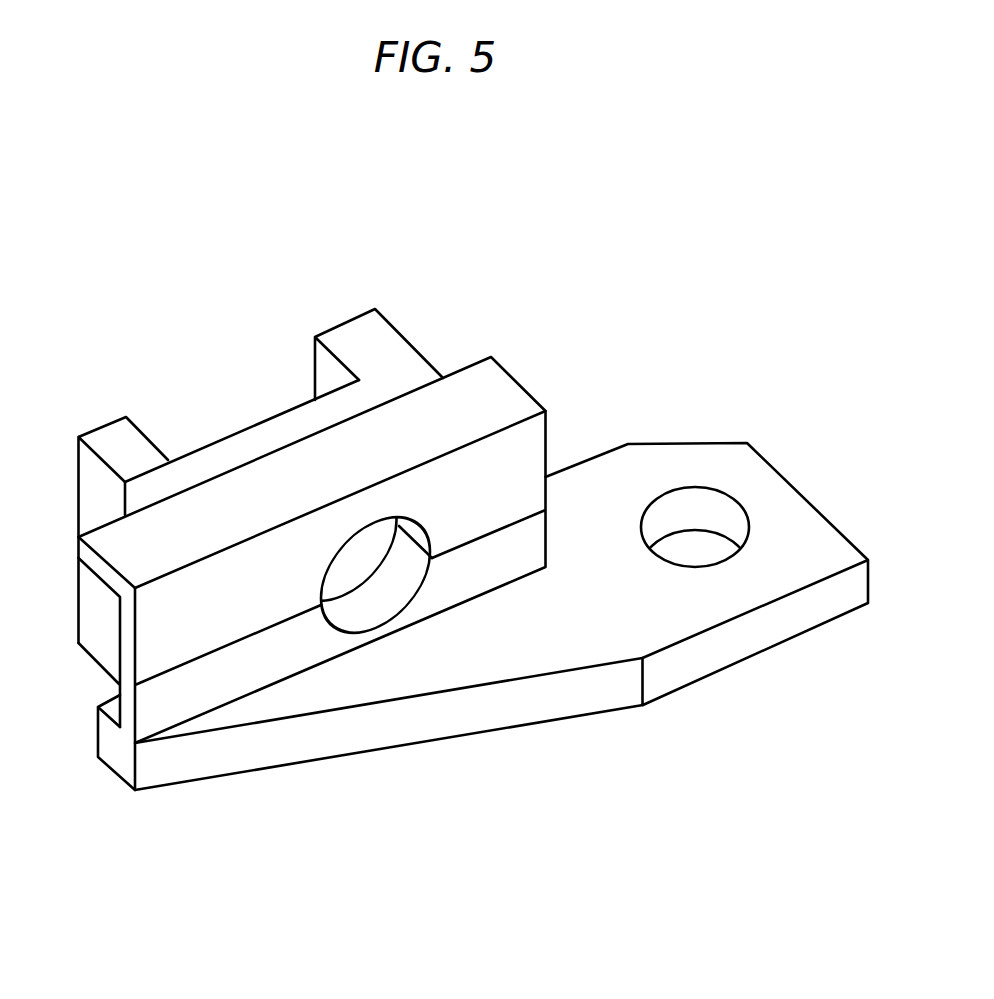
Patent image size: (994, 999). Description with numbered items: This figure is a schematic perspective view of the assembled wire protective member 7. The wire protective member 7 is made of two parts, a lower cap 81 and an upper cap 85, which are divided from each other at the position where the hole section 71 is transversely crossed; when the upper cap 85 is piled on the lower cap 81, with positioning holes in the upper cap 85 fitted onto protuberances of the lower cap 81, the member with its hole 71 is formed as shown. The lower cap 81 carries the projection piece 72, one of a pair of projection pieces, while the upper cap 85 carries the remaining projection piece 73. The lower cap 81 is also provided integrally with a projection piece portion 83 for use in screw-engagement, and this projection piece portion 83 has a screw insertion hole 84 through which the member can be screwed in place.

The wire protective member 7 is at (488, 560).
The hole section 71 is at (389, 596).
The projection piece 72 is at (108, 434).
The projection piece 73 is at (344, 328).
The lower cap 81 is at (260, 670).
The projection piece portion 83 is at (820, 545).
The screw insertion hole 84 is at (718, 515).
The upper cap 85 is at (504, 388).